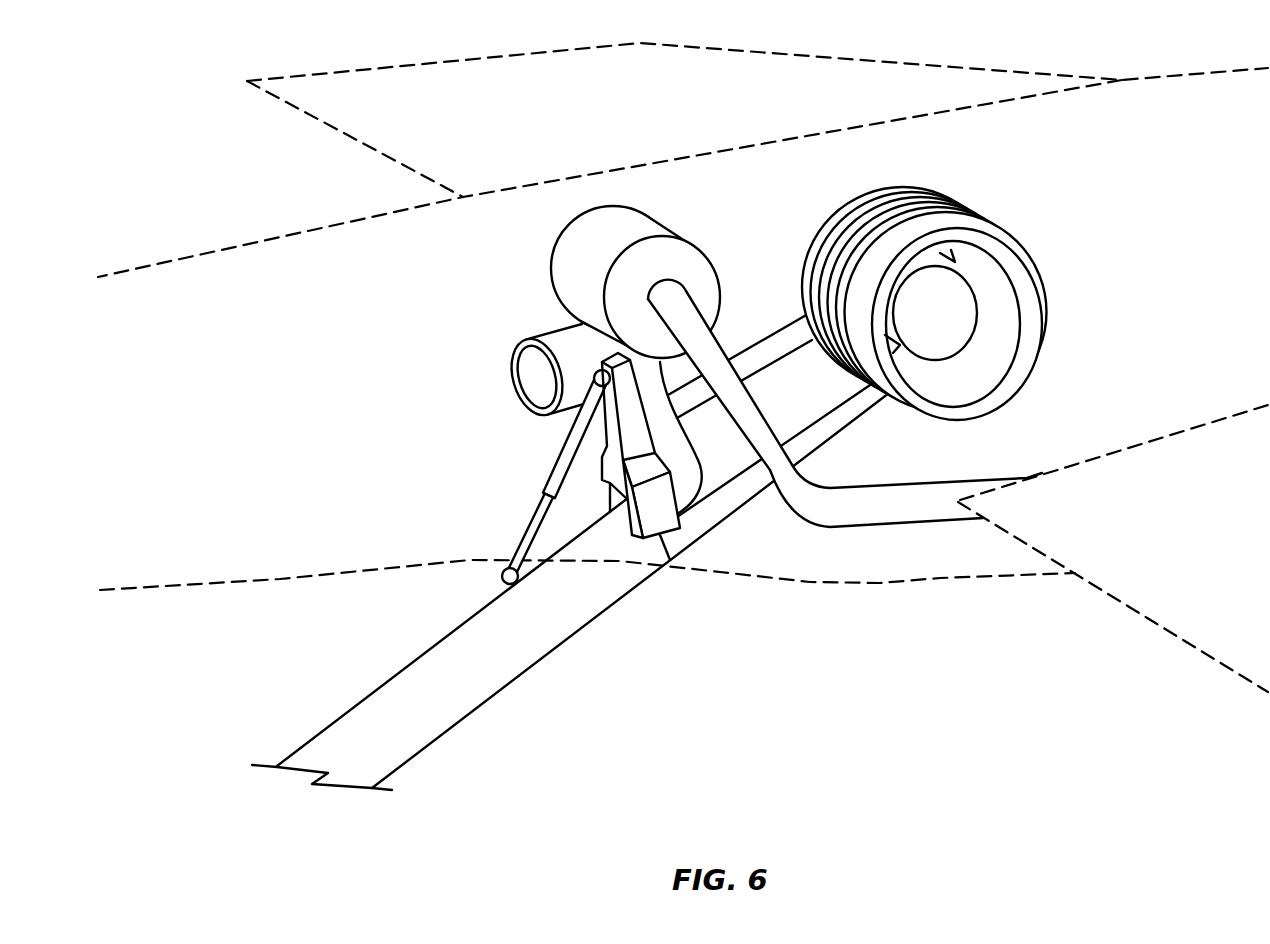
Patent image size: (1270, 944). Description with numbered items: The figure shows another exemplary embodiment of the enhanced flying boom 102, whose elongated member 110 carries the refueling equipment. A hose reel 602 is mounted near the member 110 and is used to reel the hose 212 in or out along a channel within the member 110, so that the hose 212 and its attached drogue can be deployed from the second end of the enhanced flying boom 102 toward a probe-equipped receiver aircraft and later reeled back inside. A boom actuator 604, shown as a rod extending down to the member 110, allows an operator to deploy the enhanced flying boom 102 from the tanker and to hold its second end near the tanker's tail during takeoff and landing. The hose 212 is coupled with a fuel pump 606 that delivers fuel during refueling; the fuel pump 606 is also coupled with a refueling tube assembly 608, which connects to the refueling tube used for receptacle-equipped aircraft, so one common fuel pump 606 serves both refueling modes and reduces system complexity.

The enhanced flying boom 102 is at (713, 699).
The elongated member 110 is at (440, 713).
The hose 212 is at (840, 418).
The hose reel 602 is at (972, 196).
The boom actuator 604 is at (556, 466).
The fuel pump 606 is at (563, 260).
The refueling tube assembly 608 is at (685, 464).